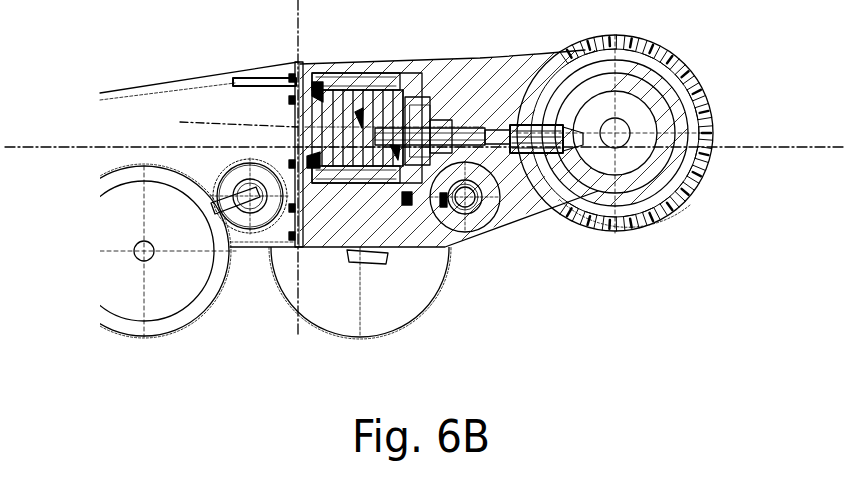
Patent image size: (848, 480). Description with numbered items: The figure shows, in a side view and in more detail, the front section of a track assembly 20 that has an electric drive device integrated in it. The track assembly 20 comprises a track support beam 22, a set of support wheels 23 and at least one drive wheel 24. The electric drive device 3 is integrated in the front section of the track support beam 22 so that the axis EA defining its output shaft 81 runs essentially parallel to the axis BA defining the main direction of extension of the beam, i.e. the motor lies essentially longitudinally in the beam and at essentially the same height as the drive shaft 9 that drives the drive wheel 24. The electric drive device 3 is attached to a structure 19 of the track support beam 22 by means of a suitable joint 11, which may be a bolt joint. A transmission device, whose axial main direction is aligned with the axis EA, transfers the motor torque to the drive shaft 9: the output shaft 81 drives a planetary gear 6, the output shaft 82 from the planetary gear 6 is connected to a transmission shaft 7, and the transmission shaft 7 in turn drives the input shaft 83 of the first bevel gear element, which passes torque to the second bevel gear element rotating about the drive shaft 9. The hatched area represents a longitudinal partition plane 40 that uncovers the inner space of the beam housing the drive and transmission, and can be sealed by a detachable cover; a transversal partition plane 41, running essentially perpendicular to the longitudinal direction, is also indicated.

The electric drive device 3 is at (326, 360).
The planetary gear 6 is at (423, 93).
The transmission shaft 7 is at (492, 127).
The drive shaft 9 is at (675, 130).
The joint 11 is at (294, 90).
The structure 19 is at (300, 73).
The track assembly 20 is at (448, 322).
The track support beam 22 is at (258, 74).
The support wheels 23 is at (163, 332).
The drive wheel 24 is at (620, 232).
The partition plane 40 is at (410, 242).
The transversal partition plane 41 is at (298, 36).
The output shaft 81 is at (407, 276).
The output shaft from planetary gear 82 is at (537, 157).
The input shaft 83 is at (493, 143).
The axis BA is at (17, 147).
The drive axis DA is at (616, 130).
The axis EA is at (232, 123).